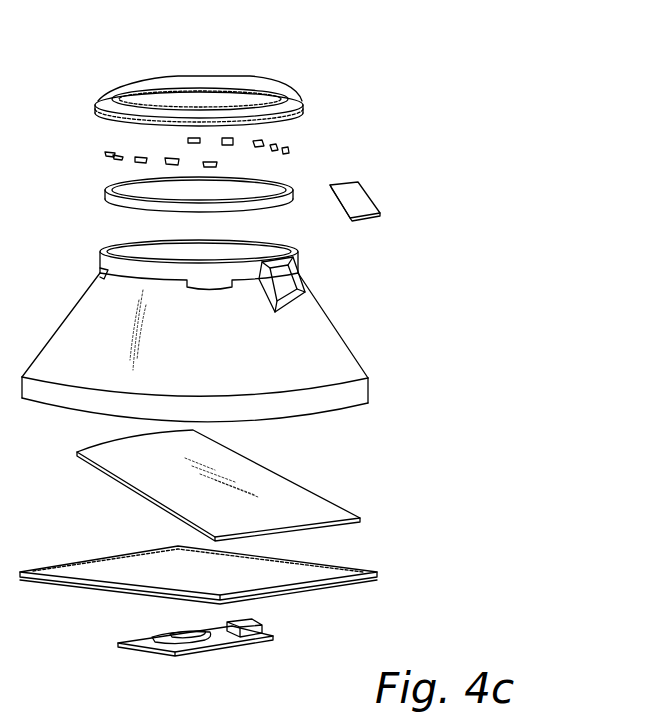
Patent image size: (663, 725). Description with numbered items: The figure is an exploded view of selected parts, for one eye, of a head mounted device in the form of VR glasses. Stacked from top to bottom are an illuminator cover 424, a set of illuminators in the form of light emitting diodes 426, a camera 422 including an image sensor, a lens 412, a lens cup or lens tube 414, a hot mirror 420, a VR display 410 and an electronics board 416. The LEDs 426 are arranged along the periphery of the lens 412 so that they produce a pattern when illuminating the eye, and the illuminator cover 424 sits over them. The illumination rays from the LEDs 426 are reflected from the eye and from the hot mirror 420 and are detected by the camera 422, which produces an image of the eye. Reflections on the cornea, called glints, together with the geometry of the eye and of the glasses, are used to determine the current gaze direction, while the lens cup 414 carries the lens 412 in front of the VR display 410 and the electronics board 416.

The illuminator cover 424 is at (280, 93).
The light emitting diodes 426 is at (272, 147).
The camera 422 is at (358, 207).
The lens 412 is at (288, 202).
The lens cup 414 is at (343, 358).
The hot mirror 420 is at (308, 503).
The VR display 410 is at (337, 570).
The electronics board 416 is at (233, 642).